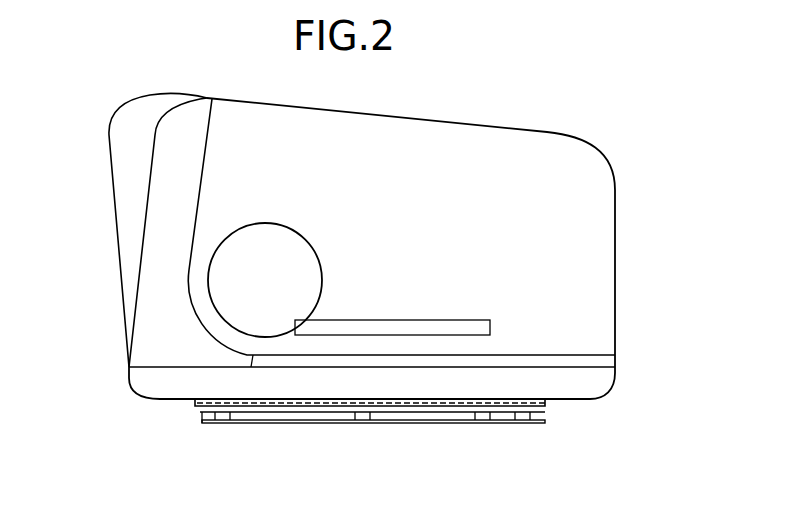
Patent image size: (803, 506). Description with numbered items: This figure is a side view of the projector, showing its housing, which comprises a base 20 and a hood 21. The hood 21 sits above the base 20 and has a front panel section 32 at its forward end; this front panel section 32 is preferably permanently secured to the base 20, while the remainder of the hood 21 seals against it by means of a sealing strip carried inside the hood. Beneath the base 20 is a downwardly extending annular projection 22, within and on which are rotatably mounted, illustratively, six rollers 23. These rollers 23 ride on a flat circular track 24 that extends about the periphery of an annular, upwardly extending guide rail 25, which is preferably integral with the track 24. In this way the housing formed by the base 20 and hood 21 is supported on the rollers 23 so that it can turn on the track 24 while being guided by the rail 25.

The base 20 is at (603, 382).
The hood 21 is at (523, 138).
The annular projection 22 is at (195, 410).
The rollers 23 is at (258, 420).
The track 24 is at (320, 425).
The guide rail 25 is at (207, 423).
The front panel section 32 is at (132, 110).